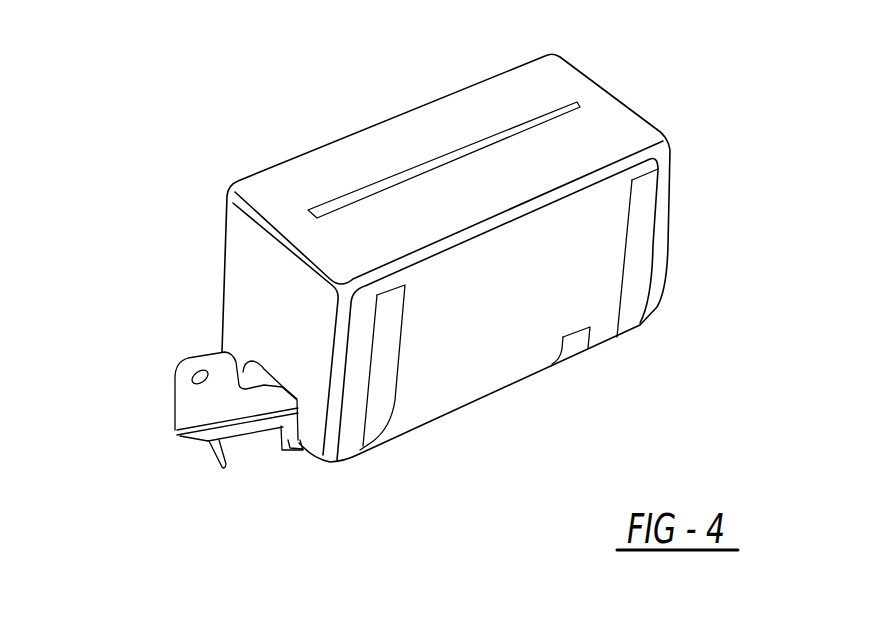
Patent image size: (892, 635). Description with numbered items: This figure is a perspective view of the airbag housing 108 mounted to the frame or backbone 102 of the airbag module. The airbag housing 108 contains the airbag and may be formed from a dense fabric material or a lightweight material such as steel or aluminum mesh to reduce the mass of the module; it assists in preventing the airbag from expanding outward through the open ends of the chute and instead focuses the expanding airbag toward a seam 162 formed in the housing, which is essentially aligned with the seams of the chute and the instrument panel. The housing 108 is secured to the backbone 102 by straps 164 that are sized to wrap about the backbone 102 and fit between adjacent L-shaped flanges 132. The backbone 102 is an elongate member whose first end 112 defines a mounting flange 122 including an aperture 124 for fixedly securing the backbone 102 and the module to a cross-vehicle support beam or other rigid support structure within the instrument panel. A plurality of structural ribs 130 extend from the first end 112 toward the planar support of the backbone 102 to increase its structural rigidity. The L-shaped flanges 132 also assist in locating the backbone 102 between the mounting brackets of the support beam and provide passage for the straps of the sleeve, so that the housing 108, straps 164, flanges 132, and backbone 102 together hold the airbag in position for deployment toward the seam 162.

The backbone 102 is at (231, 433).
The airbag housing 108 is at (491, 269).
The first end 112 is at (210, 460).
The mounting flange 122 is at (231, 433).
The aperture 124 is at (192, 372).
The structural ribs 130 is at (223, 452).
The L-shaped flanges 132 is at (297, 457).
The seam 162 is at (418, 165).
The straps 164 is at (390, 402).